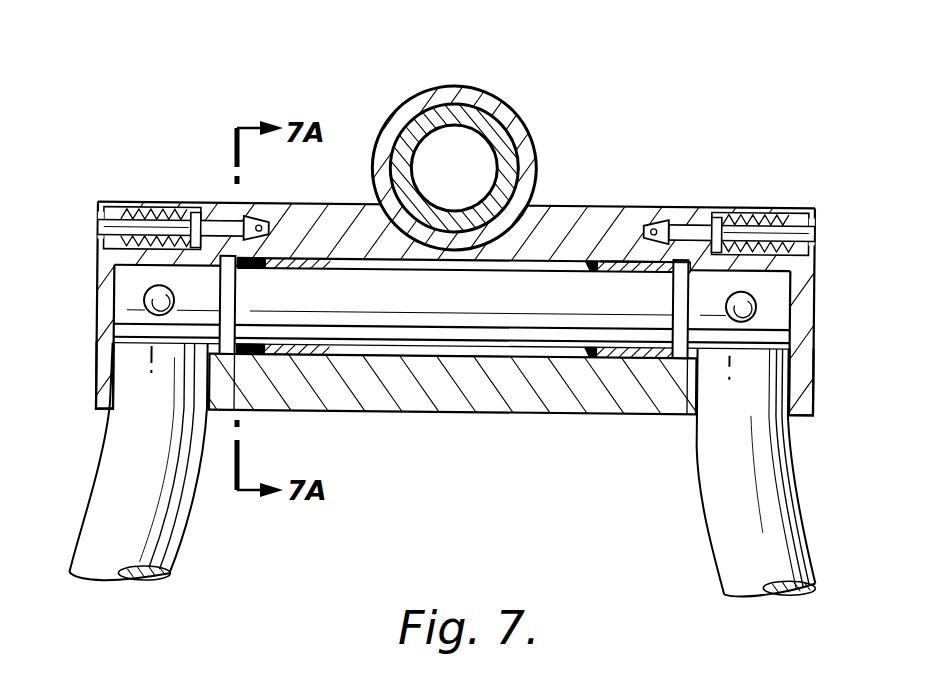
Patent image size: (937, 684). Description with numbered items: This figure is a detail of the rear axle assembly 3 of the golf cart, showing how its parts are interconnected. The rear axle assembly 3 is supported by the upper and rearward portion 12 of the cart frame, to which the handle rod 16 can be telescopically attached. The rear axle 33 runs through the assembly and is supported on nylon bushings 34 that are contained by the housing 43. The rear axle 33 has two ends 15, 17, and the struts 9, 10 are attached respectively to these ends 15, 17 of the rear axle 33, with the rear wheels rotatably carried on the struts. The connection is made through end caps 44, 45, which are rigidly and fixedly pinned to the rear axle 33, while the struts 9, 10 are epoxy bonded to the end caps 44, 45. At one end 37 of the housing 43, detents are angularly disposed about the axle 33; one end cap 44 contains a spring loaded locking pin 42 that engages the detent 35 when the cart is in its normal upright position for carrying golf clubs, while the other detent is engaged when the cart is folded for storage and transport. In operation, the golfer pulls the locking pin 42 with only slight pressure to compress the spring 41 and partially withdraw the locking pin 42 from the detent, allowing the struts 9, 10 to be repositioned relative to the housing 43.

The rear axle assembly 3 is at (553, 194).
The strut 9 is at (163, 517).
The strut 10 is at (720, 518).
The upper and rearward portion 12 is at (462, 90).
The end 15 is at (815, 292).
The rod 16 is at (406, 100).
The end 17 is at (97, 275).
The rear axle 33 is at (550, 340).
The nylon bushings 34 is at (605, 250).
The detent 35 is at (262, 210).
The end 37 is at (243, 383).
The spring 41 is at (152, 212).
The spring loaded locking pin 42 is at (222, 228).
The housing 43 is at (449, 424).
The end cap 44 is at (97, 370).
The end cap 45 is at (815, 365).